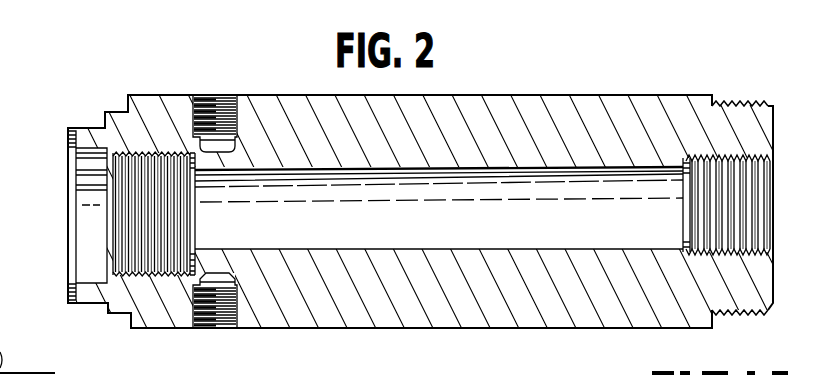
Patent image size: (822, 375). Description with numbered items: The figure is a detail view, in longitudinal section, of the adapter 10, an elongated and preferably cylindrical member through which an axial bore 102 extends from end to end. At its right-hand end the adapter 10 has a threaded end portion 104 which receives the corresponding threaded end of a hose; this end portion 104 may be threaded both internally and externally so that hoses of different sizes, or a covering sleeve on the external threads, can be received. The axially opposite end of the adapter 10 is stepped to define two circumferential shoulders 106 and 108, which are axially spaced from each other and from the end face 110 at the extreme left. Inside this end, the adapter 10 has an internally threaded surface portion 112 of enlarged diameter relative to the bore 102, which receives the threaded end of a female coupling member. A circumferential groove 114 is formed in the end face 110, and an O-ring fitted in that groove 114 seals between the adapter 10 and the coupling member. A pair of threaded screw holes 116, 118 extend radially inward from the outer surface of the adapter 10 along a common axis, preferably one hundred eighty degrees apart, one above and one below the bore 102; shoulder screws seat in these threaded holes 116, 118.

The adapter 10 is at (512, 329).
The axial bore 102 is at (492, 226).
The threaded end portion 104 is at (752, 314).
The circumferential shoulder 106 is at (127, 328).
The circumferential shoulder 108 is at (107, 114).
The end face 110 is at (68, 132).
The internally threaded surface portion 112 is at (168, 250).
The circumferential groove 114 is at (72, 288).
The threaded screw hole 116 is at (229, 108).
The threaded screw hole 118 is at (236, 331).